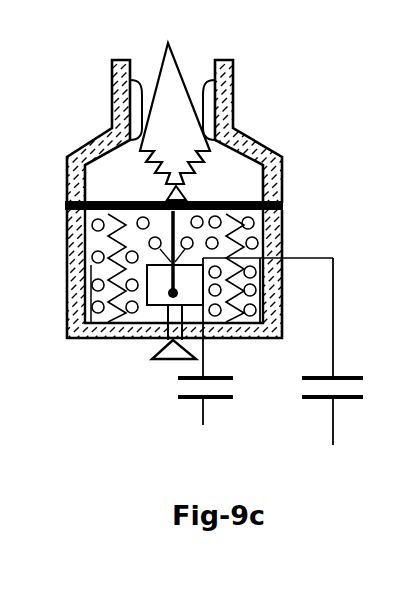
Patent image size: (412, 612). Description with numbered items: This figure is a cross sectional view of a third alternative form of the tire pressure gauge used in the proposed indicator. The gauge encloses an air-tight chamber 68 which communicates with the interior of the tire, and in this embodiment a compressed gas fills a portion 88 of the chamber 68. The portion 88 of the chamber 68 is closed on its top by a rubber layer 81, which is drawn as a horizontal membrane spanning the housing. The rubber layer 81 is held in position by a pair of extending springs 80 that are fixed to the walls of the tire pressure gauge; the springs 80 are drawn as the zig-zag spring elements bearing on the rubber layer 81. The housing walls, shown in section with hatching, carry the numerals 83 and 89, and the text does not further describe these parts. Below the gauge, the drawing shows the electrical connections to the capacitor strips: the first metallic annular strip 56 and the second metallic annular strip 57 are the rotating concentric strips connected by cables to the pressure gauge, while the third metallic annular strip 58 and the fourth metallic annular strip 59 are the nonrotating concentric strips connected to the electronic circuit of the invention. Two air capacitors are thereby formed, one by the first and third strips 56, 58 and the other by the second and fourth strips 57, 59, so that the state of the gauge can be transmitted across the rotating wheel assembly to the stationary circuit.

The extending spring 80 is at (168, 43).
The rubber layer 81 is at (265, 201).
The housing liner 83 is at (86, 226).
The portion of chamber 88 is at (86, 307).
The mounting pillar 89 is at (225, 91).
The chamber 68 is at (242, 307).
The first metallic annular strip 56 is at (206, 375).
The second metallic annular strip 57 is at (331, 375).
The third metallic annular strip 58 is at (208, 399).
The fourth metallic annular strip 59 is at (337, 400).